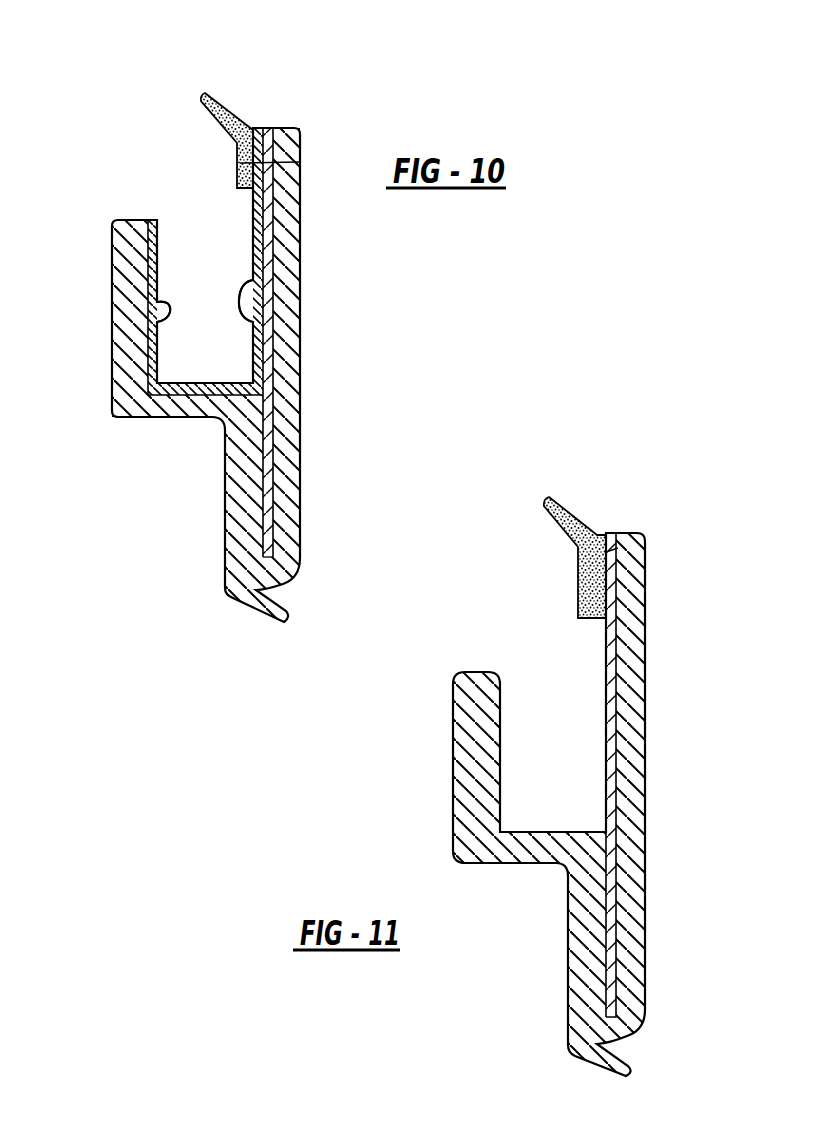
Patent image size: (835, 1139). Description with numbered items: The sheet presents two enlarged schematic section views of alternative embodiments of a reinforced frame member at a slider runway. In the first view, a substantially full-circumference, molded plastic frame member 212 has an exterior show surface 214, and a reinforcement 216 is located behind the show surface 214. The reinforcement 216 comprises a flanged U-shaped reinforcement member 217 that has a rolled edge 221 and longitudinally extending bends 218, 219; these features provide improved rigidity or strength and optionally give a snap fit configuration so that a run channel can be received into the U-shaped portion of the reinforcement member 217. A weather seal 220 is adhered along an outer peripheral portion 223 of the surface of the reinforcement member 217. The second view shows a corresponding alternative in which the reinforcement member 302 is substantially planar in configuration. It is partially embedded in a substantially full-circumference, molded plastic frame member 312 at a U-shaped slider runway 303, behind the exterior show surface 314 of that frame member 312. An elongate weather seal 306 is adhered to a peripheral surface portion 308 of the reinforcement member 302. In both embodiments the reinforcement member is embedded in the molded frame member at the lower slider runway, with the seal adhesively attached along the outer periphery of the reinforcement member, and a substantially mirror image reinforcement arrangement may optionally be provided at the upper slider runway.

In FIG. 10, the frame member 212 is at (288, 474).
In FIG. 10, the exterior show surface 214 is at (302, 368).
In FIG. 10, the reinforcement 216 is at (276, 425).
In FIG. 10, the flanged U-shaped reinforcement member 217 is at (160, 348).
In FIG. 10, the longitudinally extending bend 218 is at (166, 303).
In FIG. 10, the longitudinally extending bend 219 is at (242, 284).
In FIG. 10, the weather seal 220 is at (242, 102).
In FIG. 10, the rolled edge 221 is at (155, 218).
In FIG. 10, the outer peripheral portion 223 is at (302, 161).
In FIG. 11, the reinforcement member 302 is at (617, 870).
In FIG. 11, the U-shaped slider runway 303 is at (530, 795).
In FIG. 11, the elongate weather seal 306 is at (573, 517).
In FIG. 11, the peripheral surface portion 308 is at (618, 548).
In FIG. 11, the frame member 312 is at (633, 935).
In FIG. 11, the exterior show surface 314 is at (645, 708).